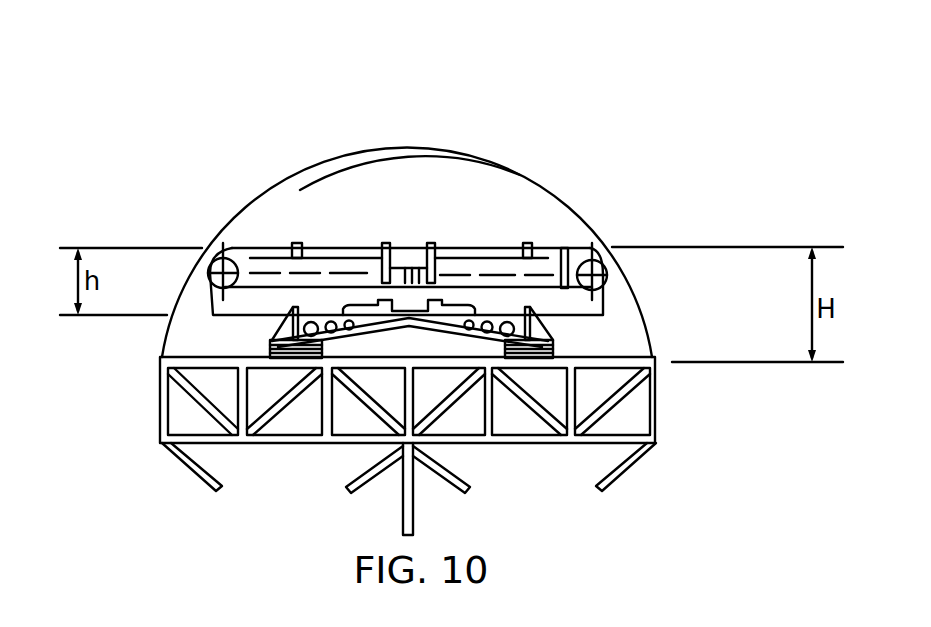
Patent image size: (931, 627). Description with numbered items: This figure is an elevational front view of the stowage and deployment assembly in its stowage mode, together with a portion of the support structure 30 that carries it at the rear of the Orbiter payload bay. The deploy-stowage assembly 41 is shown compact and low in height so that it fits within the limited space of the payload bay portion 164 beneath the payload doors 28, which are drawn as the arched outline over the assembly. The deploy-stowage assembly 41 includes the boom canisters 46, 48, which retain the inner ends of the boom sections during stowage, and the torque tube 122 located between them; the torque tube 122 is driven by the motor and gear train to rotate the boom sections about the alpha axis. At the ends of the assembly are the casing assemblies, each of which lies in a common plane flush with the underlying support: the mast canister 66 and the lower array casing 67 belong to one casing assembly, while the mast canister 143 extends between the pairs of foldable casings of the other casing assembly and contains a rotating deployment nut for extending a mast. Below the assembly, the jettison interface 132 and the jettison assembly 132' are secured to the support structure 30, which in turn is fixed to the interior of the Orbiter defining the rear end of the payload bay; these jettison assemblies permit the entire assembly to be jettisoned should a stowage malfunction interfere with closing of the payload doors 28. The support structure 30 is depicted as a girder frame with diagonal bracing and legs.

The payload doors 28 is at (542, 180).
The payload bay portion 164 is at (427, 147).
The boom canister 48 is at (343, 243).
The deploy-stowage assembly 41 is at (276, 238).
The boom canister 46 is at (508, 245).
The torque tube 122 is at (412, 258).
The lower array casing 67 is at (523, 273).
The mast canister 66 is at (212, 265).
The mast canister 143 is at (608, 272).
The jettison interface 132 is at (197, 343).
The jettison assembly 132' is at (612, 336).
The support structure 30 is at (530, 450).